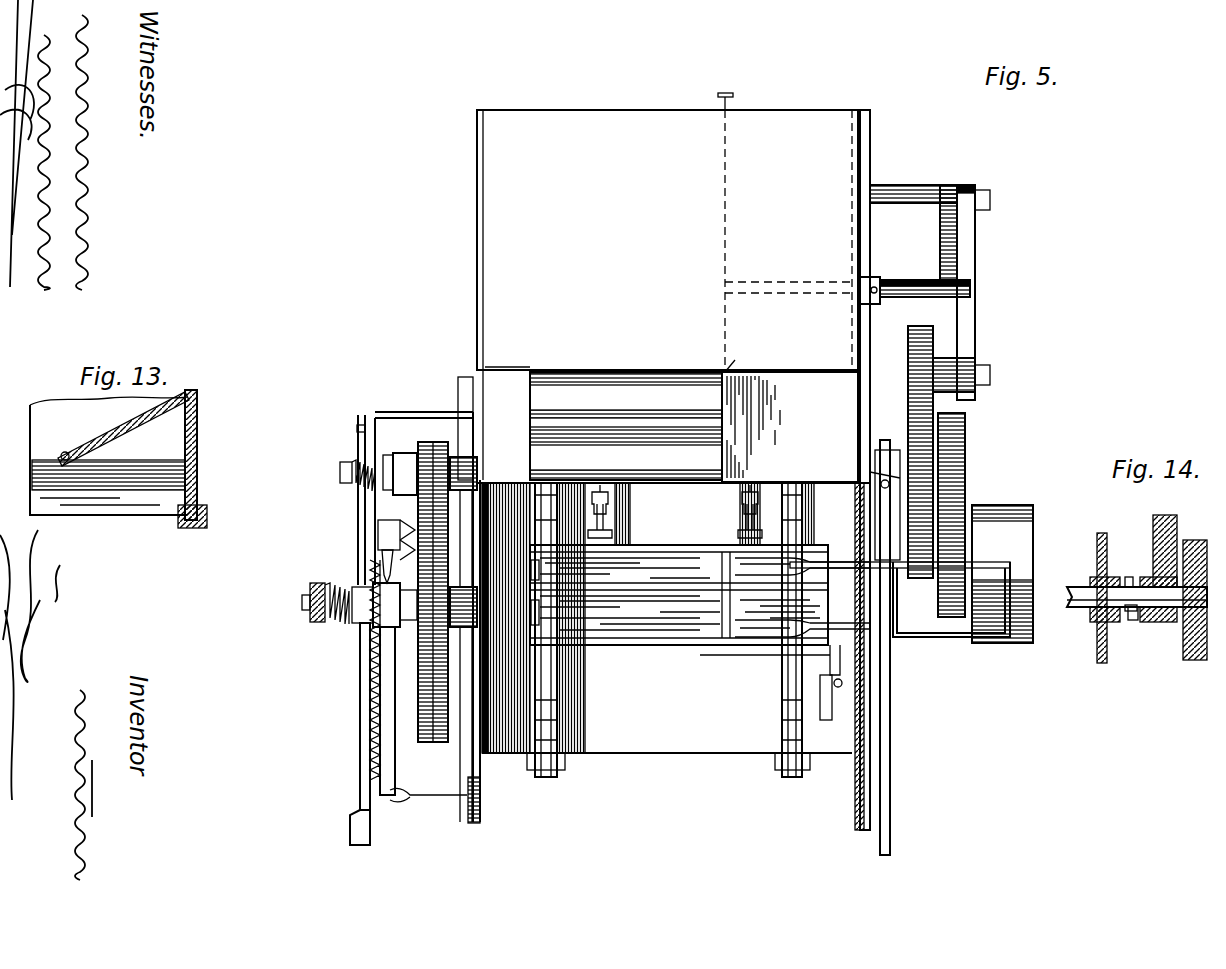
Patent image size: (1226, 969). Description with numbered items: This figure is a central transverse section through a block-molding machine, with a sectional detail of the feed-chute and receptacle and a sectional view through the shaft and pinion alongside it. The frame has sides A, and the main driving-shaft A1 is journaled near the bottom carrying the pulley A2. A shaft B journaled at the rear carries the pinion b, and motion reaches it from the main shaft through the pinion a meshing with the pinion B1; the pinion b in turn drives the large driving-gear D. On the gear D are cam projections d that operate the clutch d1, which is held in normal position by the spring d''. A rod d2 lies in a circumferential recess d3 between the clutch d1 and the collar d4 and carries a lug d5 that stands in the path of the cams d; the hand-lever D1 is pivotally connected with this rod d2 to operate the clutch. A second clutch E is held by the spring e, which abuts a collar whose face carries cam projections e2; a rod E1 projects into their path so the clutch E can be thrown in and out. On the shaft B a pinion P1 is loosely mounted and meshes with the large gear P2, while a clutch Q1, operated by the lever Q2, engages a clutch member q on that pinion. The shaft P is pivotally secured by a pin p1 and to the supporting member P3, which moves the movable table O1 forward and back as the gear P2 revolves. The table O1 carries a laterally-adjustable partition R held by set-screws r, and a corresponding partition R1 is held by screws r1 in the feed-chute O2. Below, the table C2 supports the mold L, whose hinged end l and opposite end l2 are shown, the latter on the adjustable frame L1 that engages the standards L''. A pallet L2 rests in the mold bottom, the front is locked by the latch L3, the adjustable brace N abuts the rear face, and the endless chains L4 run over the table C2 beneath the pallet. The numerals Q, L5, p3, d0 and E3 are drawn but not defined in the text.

In FIG. 5, the movable table O1 is at (590, 400).
In FIG. 13, the movable table O1 is at (122, 429).
In FIG. 5, the handle Q is at (728, 85).
In FIG. 5, the laterally-adjustable partition R is at (790, 427).
In FIG. 5, the set-screws r is at (736, 356).
In FIG. 5, the adjustable brace N is at (742, 520).
In FIG. 5, the post L5 is at (560, 765).
In FIG. 5, the table C2 is at (695, 745).
In FIG. 5, the pallet L2 is at (679, 596).
In FIG. 5, the end of mold l is at (580, 490).
In FIG. 5, the opposite end of mold l2 is at (758, 594).
In FIG. 5, the mold L is at (749, 670).
In FIG. 5, the endless chains L4 is at (687, 696).
In FIG. 5, the latch L3 is at (825, 660).
In FIG. 5, the frame L1 is at (845, 572).
In FIG. 5, the standards L'' is at (868, 600).
In FIG. 5, the sides of frame A is at (480, 690).
In FIG. 14, the sides of frame A is at (1097, 556).
In FIG. 5, the lever Q2 is at (890, 705).
In FIG. 5, the clutch Q1 is at (853, 505).
In FIG. 14, the clutch Q1 is at (1130, 622).
In FIG. 5, the pinion a is at (940, 598).
In FIG. 5, the main driving-shaft A1 is at (895, 620).
In FIG. 5, the pulley A2 is at (1036, 520).
In FIG. 5, the large gear P2 is at (908, 365).
In FIG. 14, the large gear P2 is at (1160, 515).
In FIG. 5, the pinion B1 is at (966, 452).
In FIG. 14, the pinion B1 is at (1195, 662).
In FIG. 5, the shaft B is at (450, 470).
In FIG. 14, the shaft B is at (1085, 605).
In FIG. 5, the shaft P is at (975, 335).
In FIG. 5, the supporting member P3 is at (940, 237).
In FIG. 5, the nut p3 is at (990, 198).
In FIG. 5, the bolt or pin p1 is at (990, 372).
In FIG. 5, the cam projections d is at (418, 600).
In FIG. 5, the clutch d1 is at (405, 450).
In FIG. 5, the circumferential recess d3 is at (350, 465).
In FIG. 5, the collar d4 is at (340, 472).
In FIG. 5, the spring d'' is at (349, 524).
In FIG. 5, the lug or projection d5 is at (365, 525).
In FIG. 5, the rod d2 is at (378, 522).
In FIG. 5, the rack bar d0 is at (370, 730).
In FIG. 5, the spring e is at (318, 622).
In FIG. 5, the cam projections e2 is at (365, 622).
In FIG. 5, the clutch E is at (392, 627).
In FIG. 5, the rod E1 is at (360, 688).
In FIG. 5, the foot E3 is at (350, 830).
In FIG. 5, the hand-lever D1 is at (400, 832).
In FIG. 5, the driving-gear D is at (440, 745).
In FIG. 5, the pinion b is at (410, 450).
In FIG. 13, the partition R1 is at (118, 459).
In FIG. 13, the screws r1 is at (49, 441).
In FIG. 13, the feed-chute O2 is at (197, 393).
In FIG. 14, the pinion P1 is at (1162, 622).
In FIG. 14, the clutch member q is at (1134, 577).